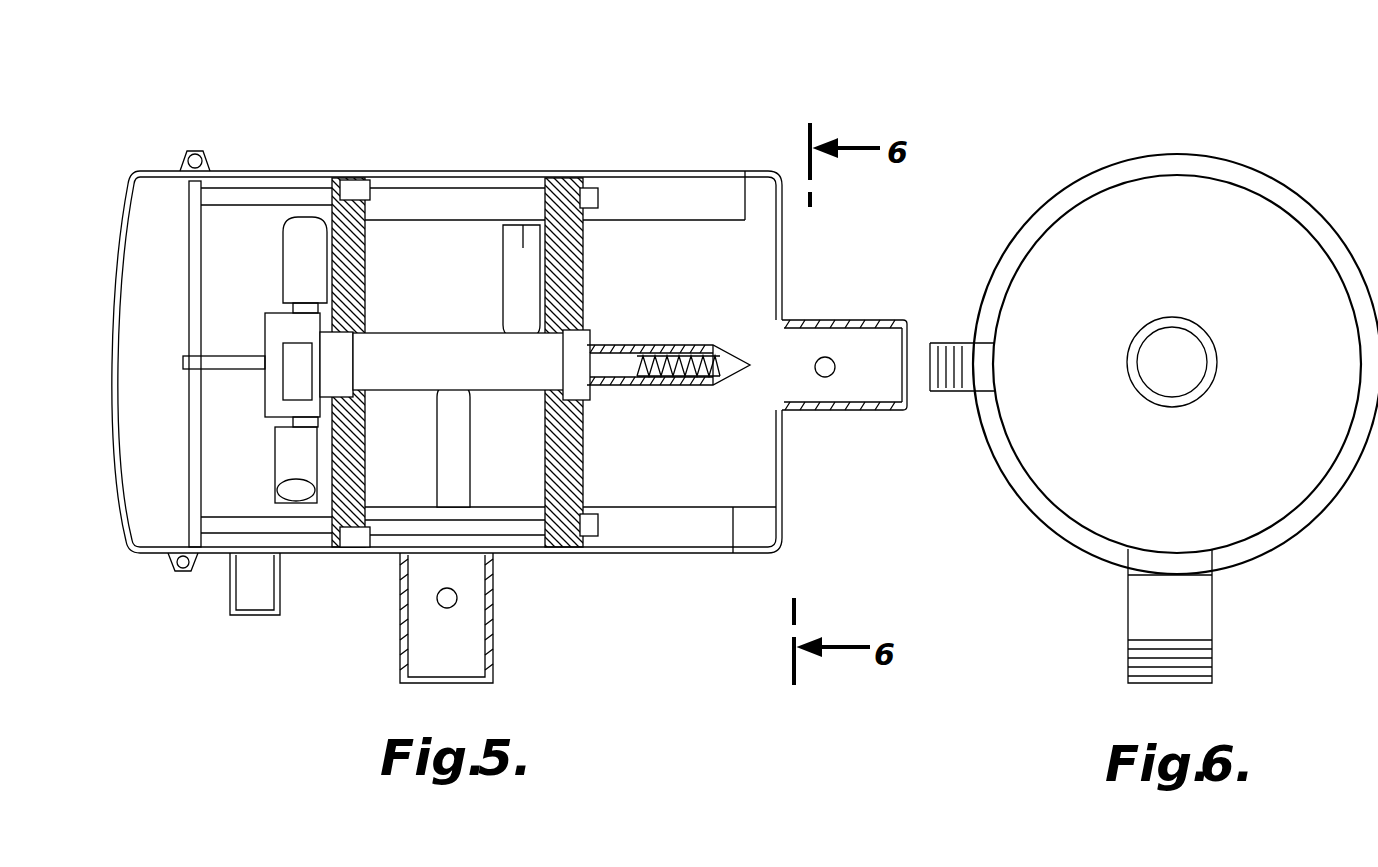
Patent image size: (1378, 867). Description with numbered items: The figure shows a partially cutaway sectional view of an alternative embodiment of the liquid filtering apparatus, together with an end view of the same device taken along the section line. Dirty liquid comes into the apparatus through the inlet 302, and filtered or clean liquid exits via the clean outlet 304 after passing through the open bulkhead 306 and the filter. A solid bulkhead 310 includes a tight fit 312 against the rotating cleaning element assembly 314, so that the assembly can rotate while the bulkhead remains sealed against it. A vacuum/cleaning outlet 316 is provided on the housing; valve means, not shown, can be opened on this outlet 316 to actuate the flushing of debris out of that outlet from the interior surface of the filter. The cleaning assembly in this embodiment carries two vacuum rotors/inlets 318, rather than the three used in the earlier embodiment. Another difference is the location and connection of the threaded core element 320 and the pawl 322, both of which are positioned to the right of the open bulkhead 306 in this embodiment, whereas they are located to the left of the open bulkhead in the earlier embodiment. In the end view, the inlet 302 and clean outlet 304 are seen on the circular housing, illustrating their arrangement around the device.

In FIG. 5, the inlet 302 is at (478, 218).
In FIG. 6, the inlet 302 is at (1130, 330).
In FIG. 5, the clean outlet 304 is at (493, 620).
In FIG. 6, the clean outlet 304 is at (1128, 612).
In FIG. 5, the open bulkhead 306 is at (587, 277).
In FIG. 5, the solid bulkhead 310 is at (400, 178).
In FIG. 5, the tight fit 312 is at (418, 195).
In FIG. 5, the rotating cleaning element assembly 314 is at (413, 375).
In FIG. 5, the vacuum/cleaning outlet 316 is at (230, 597).
In FIG. 5, the vacuum rotors/inlets 318 is at (524, 232).
In FIG. 5, the threaded core element 320 is at (688, 390).
In FIG. 5, the pawl 322 is at (663, 343).